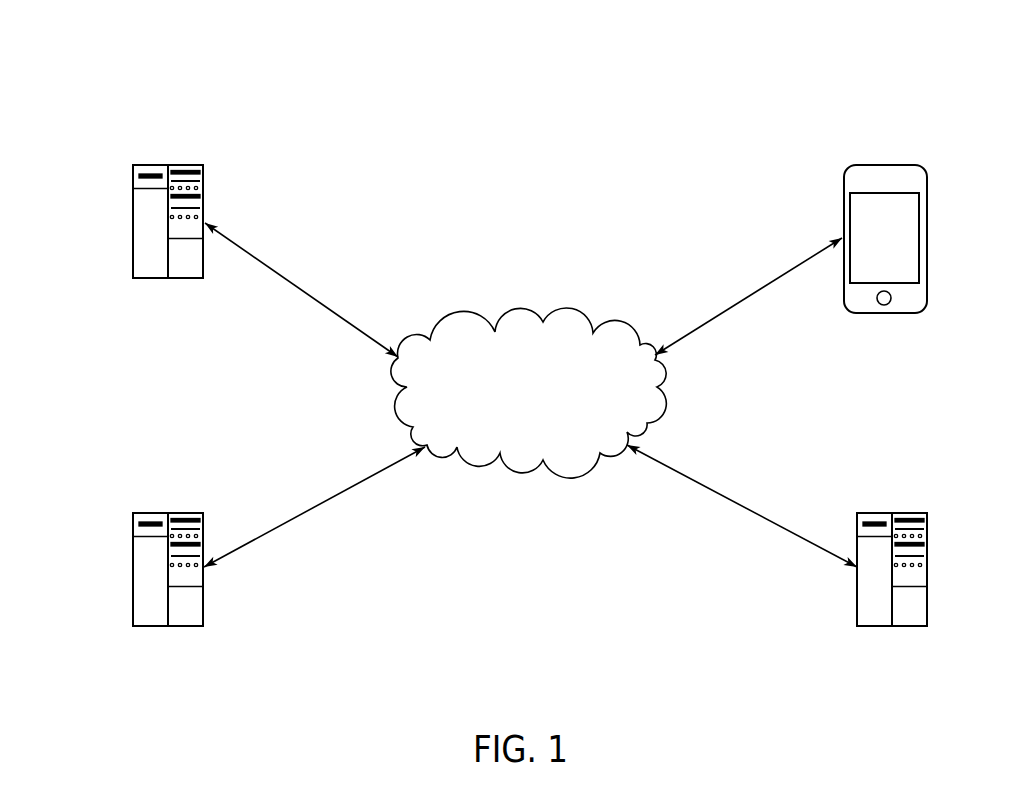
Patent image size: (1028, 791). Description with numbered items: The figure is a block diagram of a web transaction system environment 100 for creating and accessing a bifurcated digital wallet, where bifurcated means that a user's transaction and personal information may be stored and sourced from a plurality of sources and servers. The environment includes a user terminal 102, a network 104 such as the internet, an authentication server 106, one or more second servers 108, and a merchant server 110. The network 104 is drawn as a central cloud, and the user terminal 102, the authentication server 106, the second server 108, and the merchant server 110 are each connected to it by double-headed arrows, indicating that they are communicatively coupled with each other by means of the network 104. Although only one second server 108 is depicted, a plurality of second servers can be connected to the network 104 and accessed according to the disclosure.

The web transaction system environment 100 is at (218, 80).
The user terminal 102 is at (927, 238).
The network 104 is at (528, 393).
The authentication server 106 is at (133, 231).
The second server 108 is at (133, 599).
The merchant server 110 is at (857, 599).